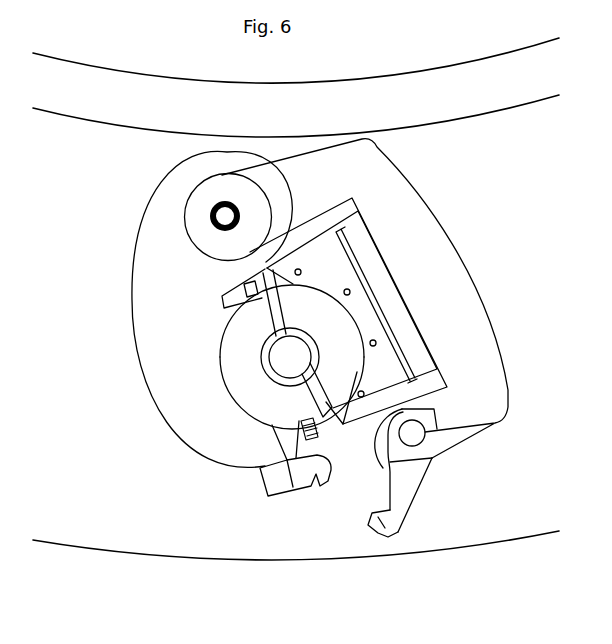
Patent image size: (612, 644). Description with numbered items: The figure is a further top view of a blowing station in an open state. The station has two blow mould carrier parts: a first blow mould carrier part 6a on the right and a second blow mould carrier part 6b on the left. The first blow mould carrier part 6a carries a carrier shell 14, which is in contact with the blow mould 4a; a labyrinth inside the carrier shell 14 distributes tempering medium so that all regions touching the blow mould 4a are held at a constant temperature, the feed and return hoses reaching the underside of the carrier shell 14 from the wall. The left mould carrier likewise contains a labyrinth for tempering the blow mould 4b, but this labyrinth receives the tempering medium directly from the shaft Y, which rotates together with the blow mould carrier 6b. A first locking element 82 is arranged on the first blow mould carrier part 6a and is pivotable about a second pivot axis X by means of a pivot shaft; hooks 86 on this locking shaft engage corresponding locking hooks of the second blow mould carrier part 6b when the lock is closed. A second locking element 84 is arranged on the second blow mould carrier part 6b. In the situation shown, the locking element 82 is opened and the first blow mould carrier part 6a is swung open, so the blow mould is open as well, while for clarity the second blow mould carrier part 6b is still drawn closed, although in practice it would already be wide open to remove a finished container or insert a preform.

The carrier shell 14 is at (334, 275).
The first blow mould carrier part 6a is at (453, 287).
The second blow mould carrier part 6b is at (167, 372).
The blow mould 4a is at (340, 353).
The blow mould 4b is at (270, 402).
The second pivot axis X is at (414, 433).
The shaft Y is at (220, 212).
The first locking element 82 is at (405, 490).
The second locking element 84 is at (317, 477).
The hooks 86 is at (398, 533).